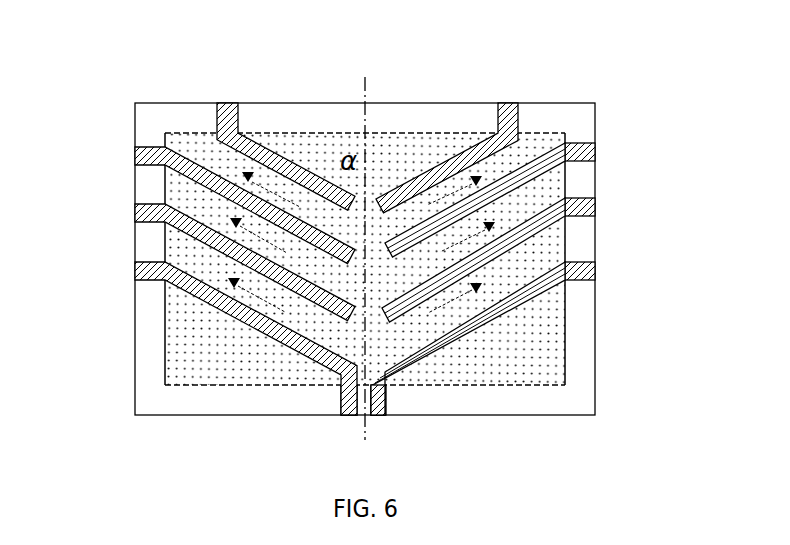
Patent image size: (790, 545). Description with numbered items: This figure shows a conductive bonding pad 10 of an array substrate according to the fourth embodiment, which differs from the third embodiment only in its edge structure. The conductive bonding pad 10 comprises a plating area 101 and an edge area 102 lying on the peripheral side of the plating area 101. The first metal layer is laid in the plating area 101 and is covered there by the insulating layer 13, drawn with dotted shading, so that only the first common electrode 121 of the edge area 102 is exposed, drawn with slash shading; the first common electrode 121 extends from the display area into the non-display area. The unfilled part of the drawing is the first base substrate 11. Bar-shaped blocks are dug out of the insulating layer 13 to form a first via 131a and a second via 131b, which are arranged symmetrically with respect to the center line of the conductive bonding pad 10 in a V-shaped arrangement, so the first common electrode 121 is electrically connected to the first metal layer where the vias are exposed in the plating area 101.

The conductive bonding pad 10 is at (387, 46).
The first base substrate 11 is at (585, 133).
The insulating layer 13 is at (565, 330).
The plating area 101 is at (257, 376).
The edge area 102 is at (312, 404).
The first common electrode 121 is at (595, 204).
The first via 131a is at (163, 232).
The second via 131b is at (545, 234).